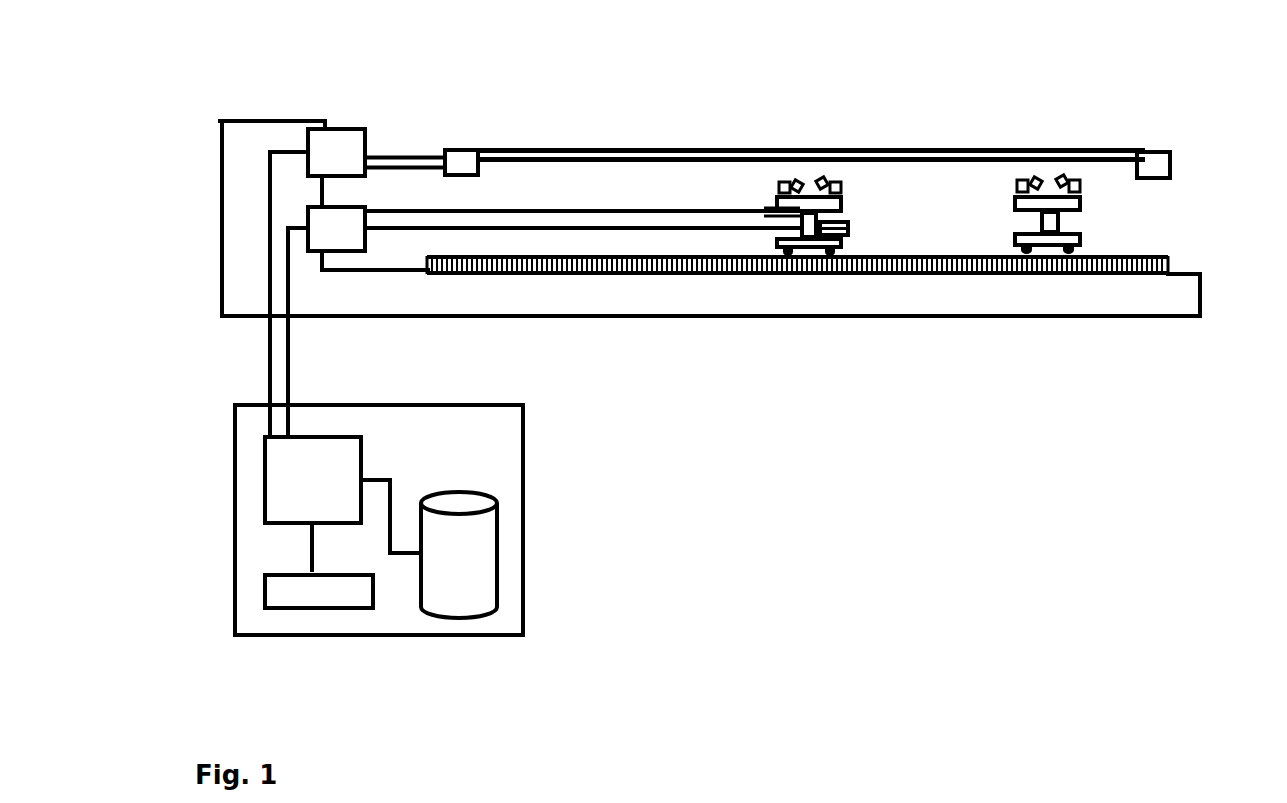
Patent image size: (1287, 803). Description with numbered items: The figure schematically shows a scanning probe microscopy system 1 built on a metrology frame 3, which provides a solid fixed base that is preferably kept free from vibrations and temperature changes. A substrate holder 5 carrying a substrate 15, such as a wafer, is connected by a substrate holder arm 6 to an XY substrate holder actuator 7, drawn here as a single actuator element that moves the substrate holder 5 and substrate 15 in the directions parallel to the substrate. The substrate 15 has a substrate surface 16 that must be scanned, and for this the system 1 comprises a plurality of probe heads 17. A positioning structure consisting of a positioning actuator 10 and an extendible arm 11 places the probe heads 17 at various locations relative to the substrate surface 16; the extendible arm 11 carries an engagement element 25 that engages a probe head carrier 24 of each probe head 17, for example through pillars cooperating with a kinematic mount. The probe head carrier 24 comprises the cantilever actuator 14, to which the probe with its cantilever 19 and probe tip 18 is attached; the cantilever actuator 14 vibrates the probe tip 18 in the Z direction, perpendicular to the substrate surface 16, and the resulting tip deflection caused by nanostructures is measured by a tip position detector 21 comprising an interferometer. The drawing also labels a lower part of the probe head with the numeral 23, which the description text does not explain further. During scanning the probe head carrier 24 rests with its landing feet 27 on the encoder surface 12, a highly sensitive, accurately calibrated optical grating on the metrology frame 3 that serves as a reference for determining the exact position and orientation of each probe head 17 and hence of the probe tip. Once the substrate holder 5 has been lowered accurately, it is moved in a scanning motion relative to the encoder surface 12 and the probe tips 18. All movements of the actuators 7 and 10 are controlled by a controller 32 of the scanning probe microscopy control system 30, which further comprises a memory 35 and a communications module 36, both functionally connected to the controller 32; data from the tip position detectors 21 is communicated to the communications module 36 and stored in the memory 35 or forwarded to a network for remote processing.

The scanning probe microscopy system 1 is at (860, 450).
The metrology frame 3 is at (218, 177).
The substrate holder 5 is at (458, 148).
The substrate holder arm 6 is at (407, 153).
The substrate holder actuator 7 is at (357, 128).
The positioning actuator 10 is at (363, 198).
The extendible arm 11 is at (525, 209).
The encoder surface 12 is at (962, 255).
The cantilever actuator 14 is at (777, 188).
The substrate 15 is at (970, 150).
The substrate surface 16 is at (1112, 160).
The probe head 17 is at (773, 200).
The probe tip 18 is at (813, 168).
The cantilever 19 is at (805, 170).
The tip position detector 21 is at (843, 192).
The carriage bottom plate 23 is at (840, 249).
The probe head carrier 24 is at (843, 205).
The engagement element 25 is at (850, 226).
The landing feet 27 is at (780, 252).
The scanning probe microscopy control system 30 is at (525, 445).
The controller 32 is at (363, 450).
The memory 35 is at (462, 492).
The communications module 36 is at (345, 610).